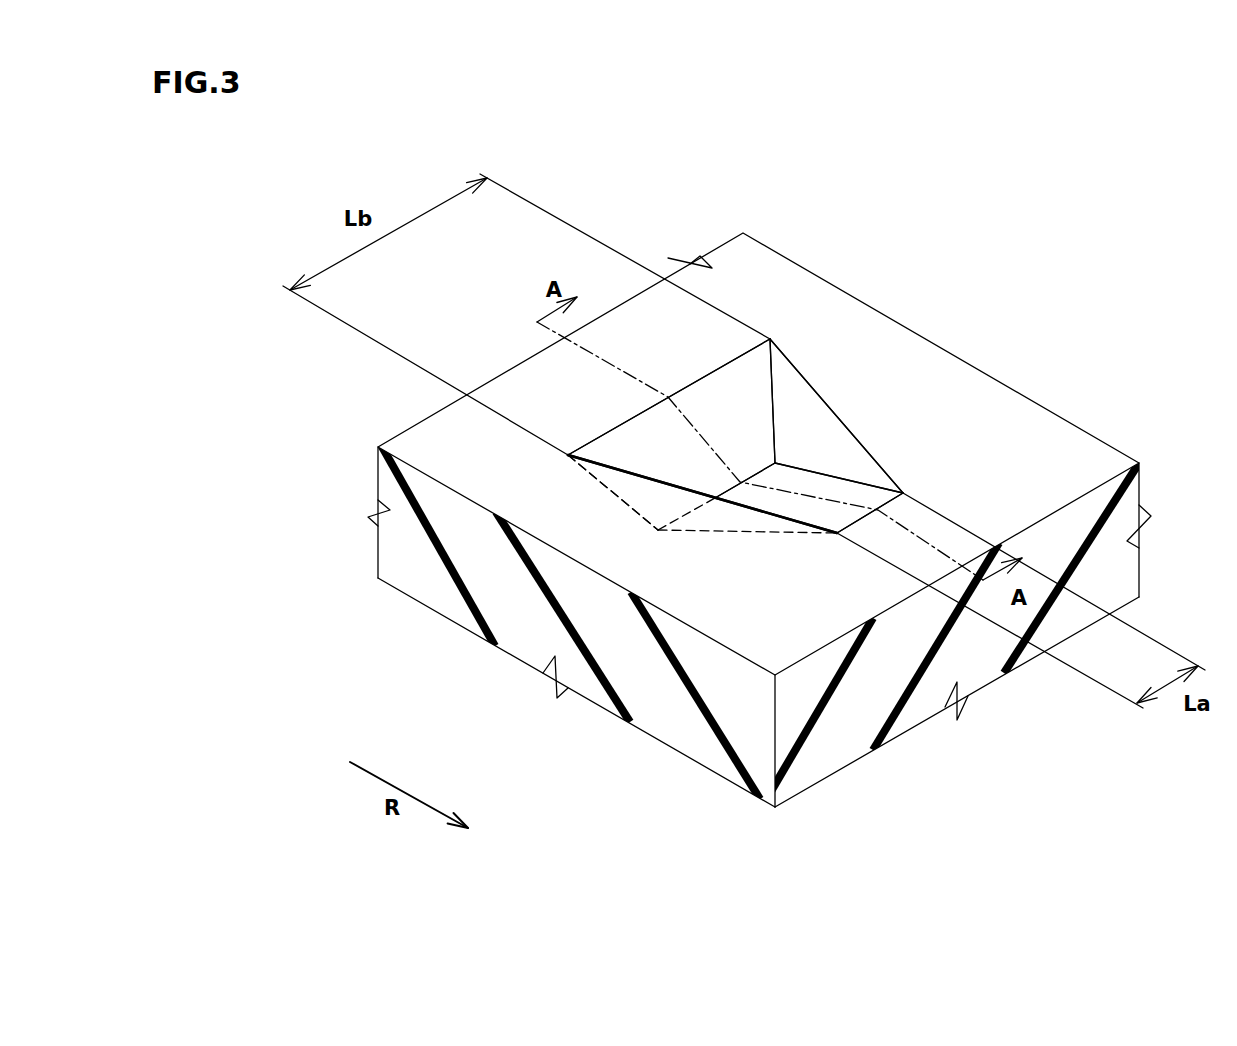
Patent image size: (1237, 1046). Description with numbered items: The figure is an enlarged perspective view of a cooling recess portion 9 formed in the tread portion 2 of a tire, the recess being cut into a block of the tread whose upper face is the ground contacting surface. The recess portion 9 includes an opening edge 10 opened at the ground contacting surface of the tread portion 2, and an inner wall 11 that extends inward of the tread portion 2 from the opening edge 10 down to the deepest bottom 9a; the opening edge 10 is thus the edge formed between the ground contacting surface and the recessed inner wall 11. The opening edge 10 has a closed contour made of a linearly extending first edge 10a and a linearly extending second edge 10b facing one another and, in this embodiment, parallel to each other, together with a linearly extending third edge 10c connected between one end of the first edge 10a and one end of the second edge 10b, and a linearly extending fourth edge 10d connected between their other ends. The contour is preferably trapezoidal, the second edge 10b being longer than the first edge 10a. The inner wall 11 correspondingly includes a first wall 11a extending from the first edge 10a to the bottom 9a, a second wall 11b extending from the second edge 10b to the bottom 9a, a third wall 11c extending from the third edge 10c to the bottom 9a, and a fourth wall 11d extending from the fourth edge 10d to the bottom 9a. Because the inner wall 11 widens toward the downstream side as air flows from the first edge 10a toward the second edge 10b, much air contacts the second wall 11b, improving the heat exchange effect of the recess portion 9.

The tread portion 2 is at (762, 283).
The cooling recess portion 9 is at (825, 517).
The bottom 9a is at (757, 466).
The opening edge 10 is at (737, 357).
The first edge 10a is at (888, 507).
The second edge 10b is at (632, 415).
The third edge 10c is at (805, 427).
The fourth edge 10d is at (713, 497).
The inner wall 11 is at (849, 495).
The first wall 11a is at (853, 462).
The second wall 11b is at (627, 452).
The third wall 11c is at (808, 448).
The fourth wall 11d is at (660, 530).